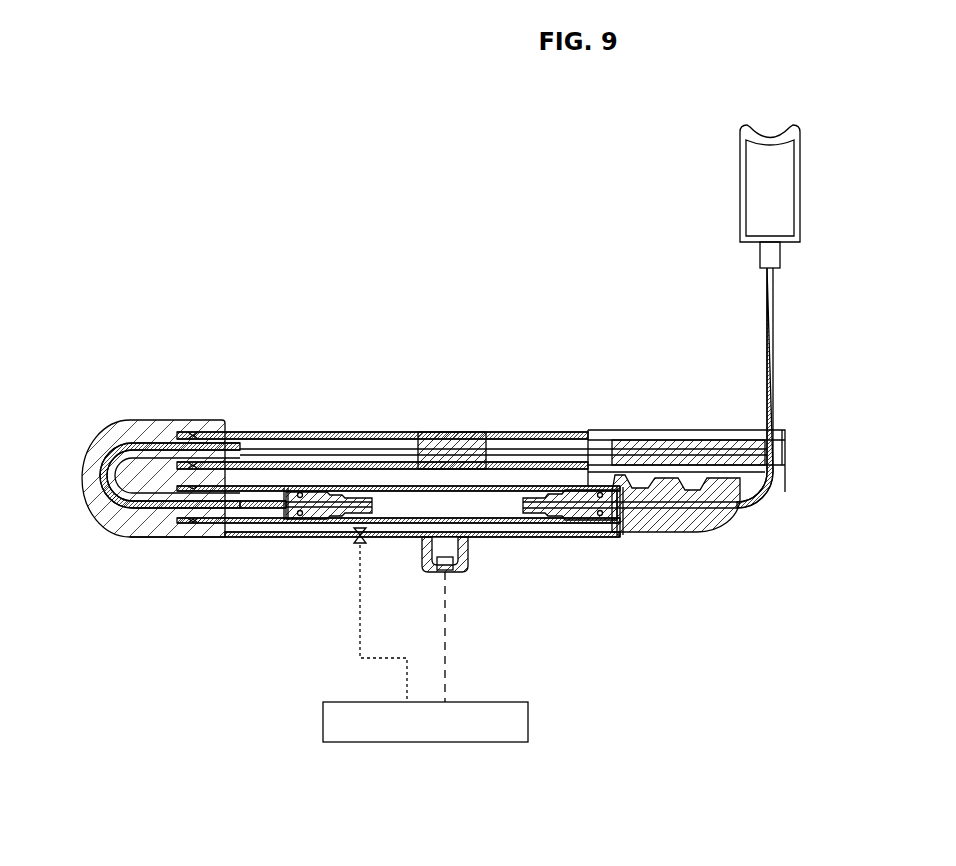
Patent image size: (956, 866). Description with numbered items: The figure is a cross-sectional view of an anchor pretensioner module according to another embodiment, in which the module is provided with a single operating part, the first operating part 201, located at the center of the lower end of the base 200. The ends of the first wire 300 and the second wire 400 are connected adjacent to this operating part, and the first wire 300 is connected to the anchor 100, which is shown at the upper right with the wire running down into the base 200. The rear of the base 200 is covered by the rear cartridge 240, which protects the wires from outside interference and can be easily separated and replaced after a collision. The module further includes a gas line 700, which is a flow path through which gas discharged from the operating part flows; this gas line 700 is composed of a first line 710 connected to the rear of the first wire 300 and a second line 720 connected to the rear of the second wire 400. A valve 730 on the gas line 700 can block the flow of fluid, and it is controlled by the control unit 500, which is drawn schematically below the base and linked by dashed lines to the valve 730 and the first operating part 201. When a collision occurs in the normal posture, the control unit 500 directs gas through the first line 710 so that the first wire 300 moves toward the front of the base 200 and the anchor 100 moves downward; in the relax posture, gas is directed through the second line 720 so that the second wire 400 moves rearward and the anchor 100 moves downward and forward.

The anchor 100 is at (755, 188).
The first wire 300 is at (767, 303).
The base 200 is at (297, 430).
The second wire 400 is at (375, 430).
The rear cartridge 240 is at (785, 492).
The gas line 700 is at (303, 566).
The first line 710 is at (253, 537).
The second line 720 is at (532, 538).
The valve 730 is at (358, 545).
The first operating part 201 is at (463, 573).
The control unit 500 is at (431, 742).